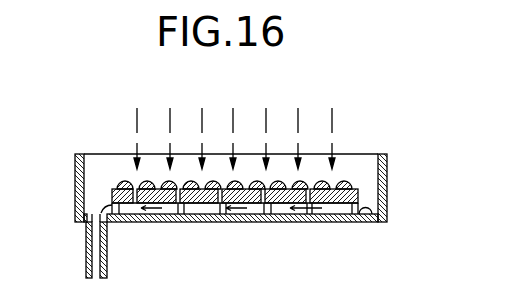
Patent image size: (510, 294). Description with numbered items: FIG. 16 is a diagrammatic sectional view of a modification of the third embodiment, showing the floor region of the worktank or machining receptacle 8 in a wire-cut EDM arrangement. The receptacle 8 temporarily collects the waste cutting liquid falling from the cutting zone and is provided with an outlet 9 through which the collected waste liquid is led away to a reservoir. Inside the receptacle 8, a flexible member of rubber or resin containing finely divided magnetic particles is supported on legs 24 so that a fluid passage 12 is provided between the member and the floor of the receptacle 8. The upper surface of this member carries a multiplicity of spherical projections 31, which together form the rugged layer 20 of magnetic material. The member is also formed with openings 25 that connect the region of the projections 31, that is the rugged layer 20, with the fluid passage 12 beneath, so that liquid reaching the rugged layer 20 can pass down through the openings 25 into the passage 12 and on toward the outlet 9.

The worktank or machining receptacle 8 is at (387, 211).
The outlet 9 is at (87, 238).
The fluid passage 12 is at (333, 213).
The rugged layer 20 is at (157, 183).
The legs 24 is at (214, 216).
The openings 25 is at (181, 207).
The spherical projections 31 is at (277, 182).